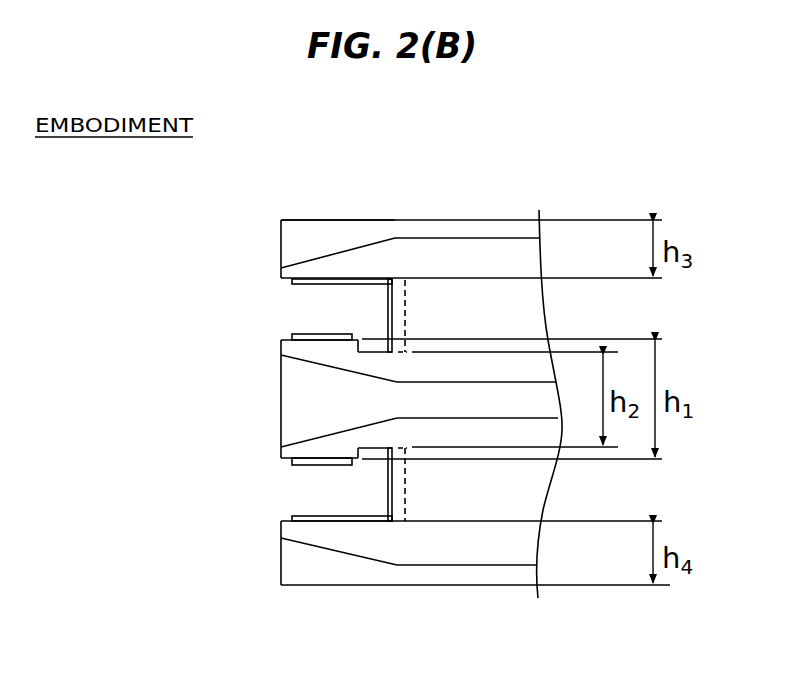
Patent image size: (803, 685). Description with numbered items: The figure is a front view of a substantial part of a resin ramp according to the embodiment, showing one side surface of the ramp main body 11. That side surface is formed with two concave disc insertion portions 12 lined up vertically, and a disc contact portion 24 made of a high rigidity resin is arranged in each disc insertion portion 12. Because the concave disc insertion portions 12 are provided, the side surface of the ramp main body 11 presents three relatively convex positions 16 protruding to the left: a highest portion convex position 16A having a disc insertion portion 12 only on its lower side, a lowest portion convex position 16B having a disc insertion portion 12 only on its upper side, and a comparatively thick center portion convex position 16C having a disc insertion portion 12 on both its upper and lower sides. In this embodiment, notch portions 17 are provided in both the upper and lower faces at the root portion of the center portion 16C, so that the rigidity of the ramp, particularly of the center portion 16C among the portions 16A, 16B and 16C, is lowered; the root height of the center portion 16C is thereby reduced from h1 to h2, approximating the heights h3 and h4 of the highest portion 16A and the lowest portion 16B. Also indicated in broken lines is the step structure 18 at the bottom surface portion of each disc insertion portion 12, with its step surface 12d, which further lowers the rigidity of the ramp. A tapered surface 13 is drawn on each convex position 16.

The ramp main body 11 is at (530, 256).
The concave disc insertion portion 12 is at (316, 310).
The step surface 12d is at (405, 322).
The tapered surface 13 is at (333, 250).
The convex position 16 is at (290, 222).
The highest portion convex position 16A is at (288, 249).
The lowest portion convex position 16B is at (295, 565).
The center portion convex position 16C is at (297, 395).
The notch portion 17 is at (373, 345).
The step structure 18 is at (400, 306).
The disc contact portion 24 is at (304, 289).